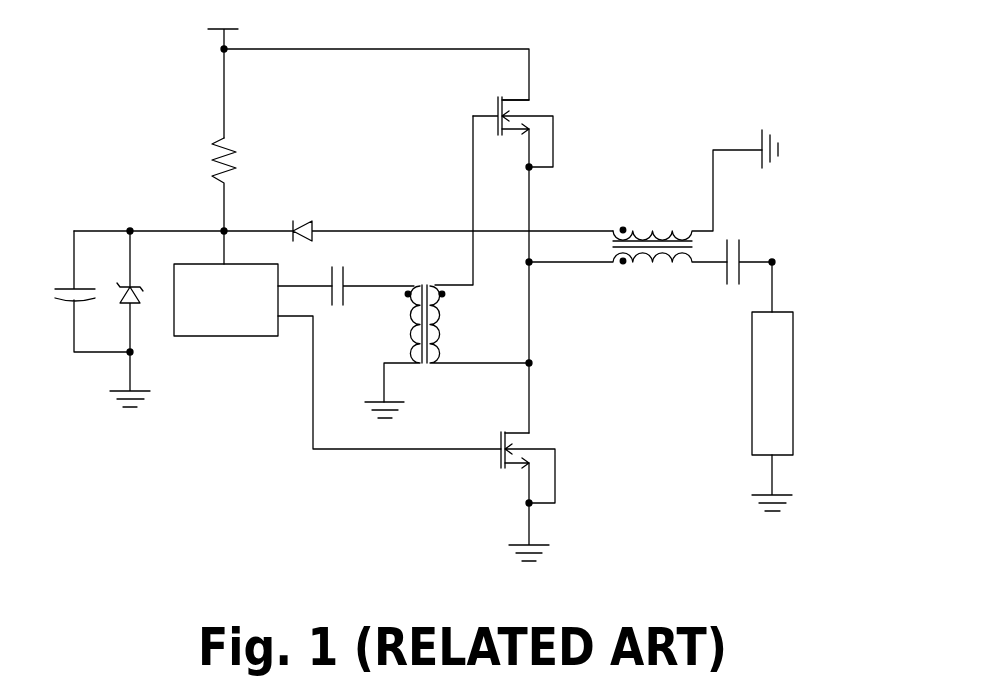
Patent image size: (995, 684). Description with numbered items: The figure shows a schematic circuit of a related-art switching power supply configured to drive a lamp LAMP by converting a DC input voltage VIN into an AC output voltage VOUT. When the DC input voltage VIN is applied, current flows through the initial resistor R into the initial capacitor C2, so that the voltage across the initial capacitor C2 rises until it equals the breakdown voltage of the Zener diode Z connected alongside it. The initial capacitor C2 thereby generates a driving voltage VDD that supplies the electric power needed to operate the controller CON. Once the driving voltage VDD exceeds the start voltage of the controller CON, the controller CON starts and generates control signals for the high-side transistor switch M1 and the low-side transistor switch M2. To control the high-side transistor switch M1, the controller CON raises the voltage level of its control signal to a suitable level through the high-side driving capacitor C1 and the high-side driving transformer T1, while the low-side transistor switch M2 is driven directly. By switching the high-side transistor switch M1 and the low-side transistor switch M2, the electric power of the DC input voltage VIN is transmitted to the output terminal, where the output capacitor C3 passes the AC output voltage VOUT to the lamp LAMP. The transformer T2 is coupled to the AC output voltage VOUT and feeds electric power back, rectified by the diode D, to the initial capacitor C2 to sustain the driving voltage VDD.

The DC input voltage VIN is at (366, 69).
The initial resistor R is at (237, 201).
The driving voltage VDD is at (183, 220).
The diode D is at (453, 219).
The initial capacitor C2 is at (85, 291).
The Zener diode Z is at (124, 317).
The controller CON is at (337, 356).
The high-side driving capacitor C1 is at (373, 281).
The high-side driving transformer T1 is at (447, 267).
The high-side transistor switch M1 is at (513, 265).
The low-side transistor switch M2 is at (525, 496).
The transformer T2 is at (653, 197).
The output capacitor C3 is at (737, 275).
The AC output voltage VOUT is at (799, 285).
The lamp LAMP is at (790, 387).